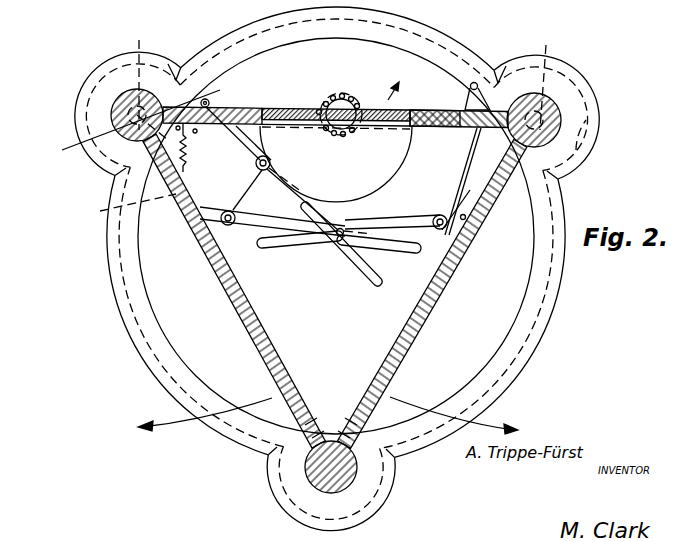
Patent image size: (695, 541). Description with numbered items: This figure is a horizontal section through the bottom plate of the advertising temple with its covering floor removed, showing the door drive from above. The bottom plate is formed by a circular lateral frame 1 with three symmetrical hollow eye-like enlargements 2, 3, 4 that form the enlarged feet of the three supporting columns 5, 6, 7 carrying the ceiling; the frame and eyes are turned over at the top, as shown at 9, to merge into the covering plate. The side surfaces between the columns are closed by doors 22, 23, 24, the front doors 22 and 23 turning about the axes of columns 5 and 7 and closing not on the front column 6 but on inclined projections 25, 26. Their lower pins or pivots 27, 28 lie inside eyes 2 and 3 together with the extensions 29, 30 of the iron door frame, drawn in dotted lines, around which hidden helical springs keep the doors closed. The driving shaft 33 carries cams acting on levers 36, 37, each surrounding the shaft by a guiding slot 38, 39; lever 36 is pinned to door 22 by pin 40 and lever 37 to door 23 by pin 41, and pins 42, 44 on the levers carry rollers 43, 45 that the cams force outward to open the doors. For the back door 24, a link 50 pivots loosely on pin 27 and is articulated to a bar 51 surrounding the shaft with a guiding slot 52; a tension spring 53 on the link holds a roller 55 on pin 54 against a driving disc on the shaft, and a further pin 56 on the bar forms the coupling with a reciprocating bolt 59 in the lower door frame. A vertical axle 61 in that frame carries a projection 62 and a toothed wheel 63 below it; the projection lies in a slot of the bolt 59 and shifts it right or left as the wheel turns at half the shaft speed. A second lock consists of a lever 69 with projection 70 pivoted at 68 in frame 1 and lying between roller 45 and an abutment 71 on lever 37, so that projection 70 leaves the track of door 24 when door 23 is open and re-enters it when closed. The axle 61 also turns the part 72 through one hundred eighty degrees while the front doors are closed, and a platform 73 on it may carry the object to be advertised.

The lateral frame 1 is at (122, 337).
The eye-like enlargement 2 is at (85, 122).
The eye-like enlargement 3 is at (600, 120).
The eye-like enlargement 4 is at (388, 512).
The supporting column 5 is at (135, 124).
The supporting column 6 is at (300, 480).
The supporting column 7 is at (550, 104).
The turned-over top 9 is at (118, 258).
The front door 22 is at (181, 216).
The front door 23 is at (480, 221).
The back door 24 is at (437, 112).
The projection 25 is at (318, 412).
The projection 26 is at (360, 432).
The lower pin 27 is at (148, 81).
The lower pin 28 is at (590, 142).
The extension of the iron frame 29 is at (178, 60).
The extension of the iron frame 30 is at (542, 79).
The driving shaft 33 is at (346, 228).
The lever 36 is at (245, 215).
The lever 37 is at (405, 220).
The guiding slot 38 is at (410, 255).
The guiding slot 39 is at (280, 250).
The pin 40 is at (100, 211).
The pin 41 is at (470, 212).
The pin 42 is at (235, 225).
The roller 43 is at (228, 211).
The pin 44 is at (417, 248).
The roller 45 is at (442, 214).
The link 50 is at (212, 104).
The bar 51 is at (296, 190).
The guiding slot 52 is at (360, 275).
The tension spring 53 is at (189, 152).
The pin 54 is at (270, 160).
The roller 55 is at (256, 200).
The pin 56 is at (256, 166).
The reciprocating bolt 59 is at (270, 112).
The vertical axle 61 is at (334, 100).
The projection 62 is at (362, 112).
The toothed wheel 63 is at (342, 96).
The pivot 68 is at (480, 68).
The lever 69 is at (467, 165).
The projection 70 is at (468, 106).
The abutment 71 is at (458, 204).
The part 72 is at (395, 128).
The platform 73 is at (408, 172).